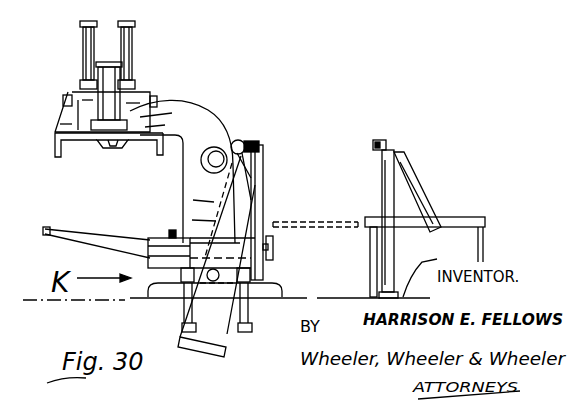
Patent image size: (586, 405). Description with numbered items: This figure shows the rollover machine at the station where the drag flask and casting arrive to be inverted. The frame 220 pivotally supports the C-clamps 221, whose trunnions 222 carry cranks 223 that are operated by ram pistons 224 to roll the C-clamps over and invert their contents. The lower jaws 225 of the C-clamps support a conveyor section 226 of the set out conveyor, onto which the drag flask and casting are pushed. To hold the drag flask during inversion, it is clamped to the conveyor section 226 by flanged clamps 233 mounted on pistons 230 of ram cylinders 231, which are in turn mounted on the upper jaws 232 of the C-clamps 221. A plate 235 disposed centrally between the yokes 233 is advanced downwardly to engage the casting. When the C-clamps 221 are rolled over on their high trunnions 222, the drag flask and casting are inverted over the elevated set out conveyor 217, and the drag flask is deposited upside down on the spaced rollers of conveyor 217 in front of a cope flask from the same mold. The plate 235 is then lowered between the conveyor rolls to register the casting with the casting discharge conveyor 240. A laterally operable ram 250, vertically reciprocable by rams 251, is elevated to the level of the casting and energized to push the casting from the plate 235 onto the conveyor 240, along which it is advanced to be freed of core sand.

The elevated set out conveyor 217 is at (381, 140).
The frame 220 is at (197, 191).
The C-clamps 221 is at (208, 126).
The trunnions 222 is at (213, 152).
The cranks 223 is at (253, 147).
The ram pistons 224 is at (241, 173).
The lower jaws 225 is at (123, 247).
The conveyor section 226 is at (50, 228).
The pistons 230 is at (110, 148).
The ram cylinders 231 is at (134, 73).
The upper jaws 232 is at (160, 118).
The flanged clamps 233 is at (55, 149).
The plate 235 is at (153, 99).
The casting discharge conveyor 240 is at (443, 217).
The laterally operable ram 250 is at (275, 246).
The rams 251 is at (183, 302).